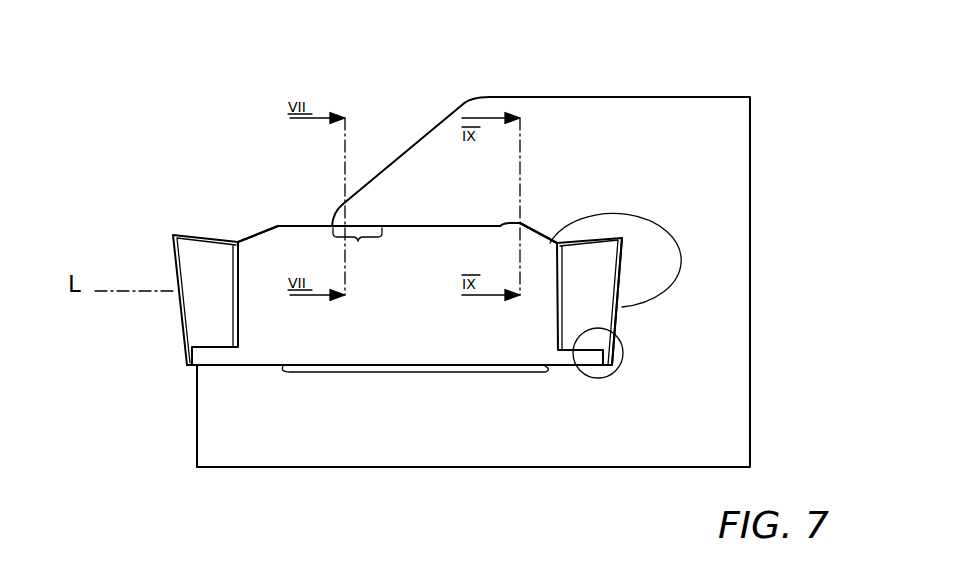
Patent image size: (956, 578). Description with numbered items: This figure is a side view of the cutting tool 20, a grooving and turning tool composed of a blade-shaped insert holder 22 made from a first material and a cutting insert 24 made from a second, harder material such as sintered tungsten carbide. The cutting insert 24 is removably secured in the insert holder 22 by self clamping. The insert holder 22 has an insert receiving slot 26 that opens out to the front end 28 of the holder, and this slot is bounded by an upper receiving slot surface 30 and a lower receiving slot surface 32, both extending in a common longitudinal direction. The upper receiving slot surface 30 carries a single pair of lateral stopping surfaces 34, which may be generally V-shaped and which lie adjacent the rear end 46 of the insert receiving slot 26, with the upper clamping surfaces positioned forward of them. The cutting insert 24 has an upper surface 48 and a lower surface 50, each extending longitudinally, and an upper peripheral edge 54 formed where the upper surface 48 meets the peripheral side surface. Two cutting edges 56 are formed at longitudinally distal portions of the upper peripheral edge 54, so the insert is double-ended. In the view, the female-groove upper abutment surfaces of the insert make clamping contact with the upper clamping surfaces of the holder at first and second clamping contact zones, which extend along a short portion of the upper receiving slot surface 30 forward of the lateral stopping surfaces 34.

The cutting tool 20 is at (228, 157).
The insert holder 22 is at (705, 338).
The cutting insert 24 is at (452, 345).
The insert receiving slot 26 is at (218, 215).
The front end 28 is at (197, 413).
The upper receiving slot surface 30 is at (485, 230).
The lower receiving slot surface 32 is at (368, 365).
The lateral stopping surfaces 34 is at (548, 228).
The rear end 46 is at (613, 318).
The upper surface 48 is at (398, 227).
The lower surface 50 is at (413, 367).
The upper peripheral edge 54 is at (293, 226).
The cutting edges 56 is at (173, 237).